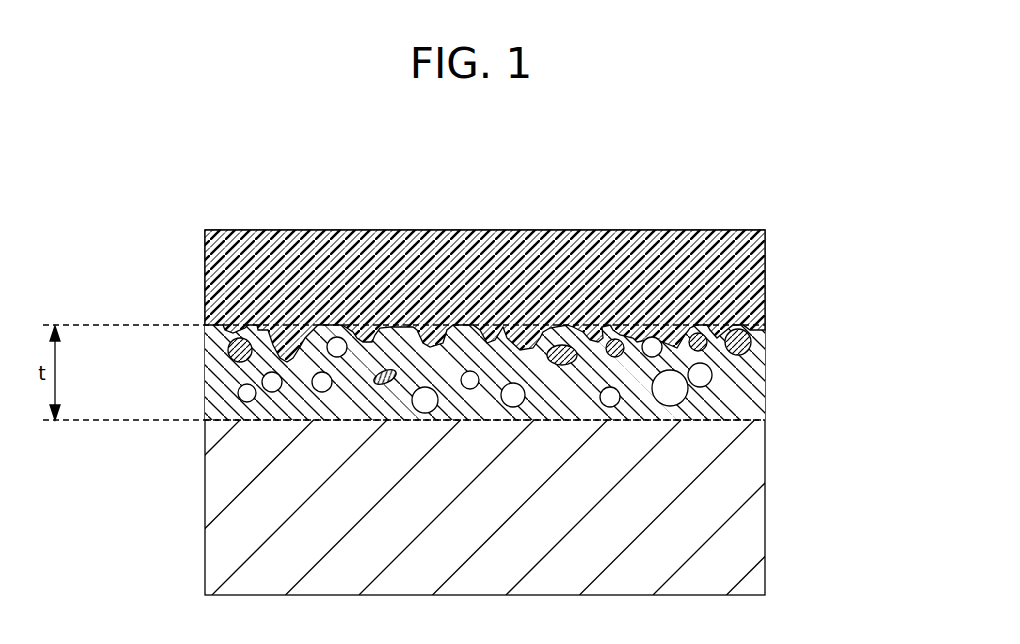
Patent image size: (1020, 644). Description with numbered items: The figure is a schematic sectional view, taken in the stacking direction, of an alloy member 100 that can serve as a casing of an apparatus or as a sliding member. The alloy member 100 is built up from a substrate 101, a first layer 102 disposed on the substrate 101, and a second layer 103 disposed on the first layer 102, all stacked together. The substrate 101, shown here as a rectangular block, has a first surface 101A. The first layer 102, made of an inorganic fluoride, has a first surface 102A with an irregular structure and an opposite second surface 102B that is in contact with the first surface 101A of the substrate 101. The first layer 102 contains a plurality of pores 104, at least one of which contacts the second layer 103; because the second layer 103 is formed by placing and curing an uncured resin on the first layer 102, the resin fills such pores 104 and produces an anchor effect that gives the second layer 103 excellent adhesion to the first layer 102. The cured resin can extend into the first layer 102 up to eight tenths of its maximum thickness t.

The alloy member 100 is at (502, 148).
The substrate 101 is at (745, 518).
The first surface of the substrate 101A is at (265, 421).
The first layer 102 is at (745, 402).
The first surface of the first layer 102A is at (223, 325).
The second surface of the first layer 102B is at (223, 421).
The second layer 103 is at (745, 243).
The pores 104 is at (752, 345).